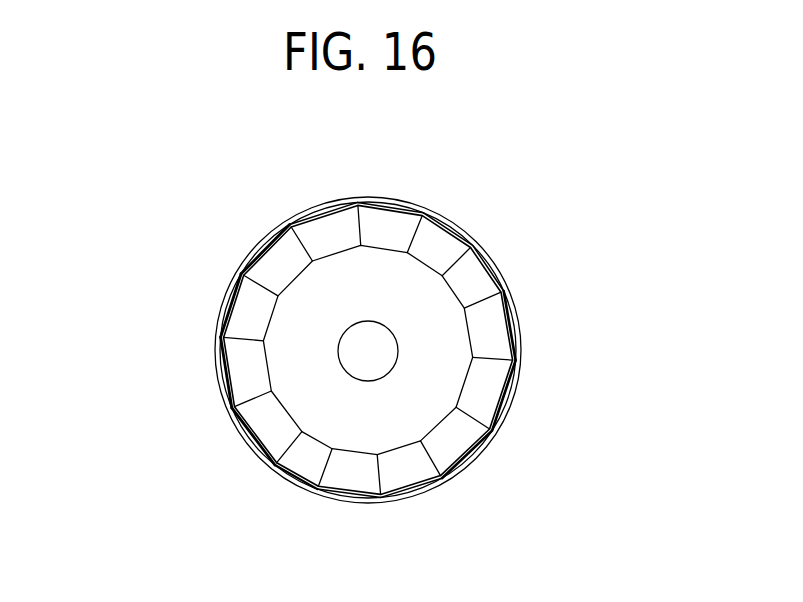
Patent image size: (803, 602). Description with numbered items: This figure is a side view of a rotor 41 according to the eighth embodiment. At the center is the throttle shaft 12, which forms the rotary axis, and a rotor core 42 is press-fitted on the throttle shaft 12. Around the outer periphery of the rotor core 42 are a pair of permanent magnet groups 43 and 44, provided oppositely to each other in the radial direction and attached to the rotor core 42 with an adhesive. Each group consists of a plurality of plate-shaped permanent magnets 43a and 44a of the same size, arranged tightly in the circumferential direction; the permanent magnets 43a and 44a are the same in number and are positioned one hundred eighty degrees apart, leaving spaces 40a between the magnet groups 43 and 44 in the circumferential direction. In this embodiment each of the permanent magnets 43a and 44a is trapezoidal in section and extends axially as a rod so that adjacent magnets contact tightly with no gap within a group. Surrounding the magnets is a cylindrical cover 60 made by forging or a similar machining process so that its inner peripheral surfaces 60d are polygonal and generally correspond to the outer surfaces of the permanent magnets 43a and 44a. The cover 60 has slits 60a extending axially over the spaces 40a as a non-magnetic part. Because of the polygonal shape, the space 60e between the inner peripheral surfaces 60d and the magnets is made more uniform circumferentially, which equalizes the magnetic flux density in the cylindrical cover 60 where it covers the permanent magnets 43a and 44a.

The throttle shaft 12 is at (382, 340).
The spaces 40a is at (432, 232).
The rotor 41 is at (470, 216).
The rotor core 42 is at (447, 375).
The permanent magnet group 43 is at (468, 462).
The permanent magnets 43a is at (482, 290).
The permanent magnet group 44 is at (268, 237).
The permanent magnets 44a is at (385, 213).
The cylindrical cover 60 is at (518, 320).
The slits 60a is at (325, 207).
The inner peripheral surfaces 60d is at (224, 370).
The space 60e is at (228, 315).